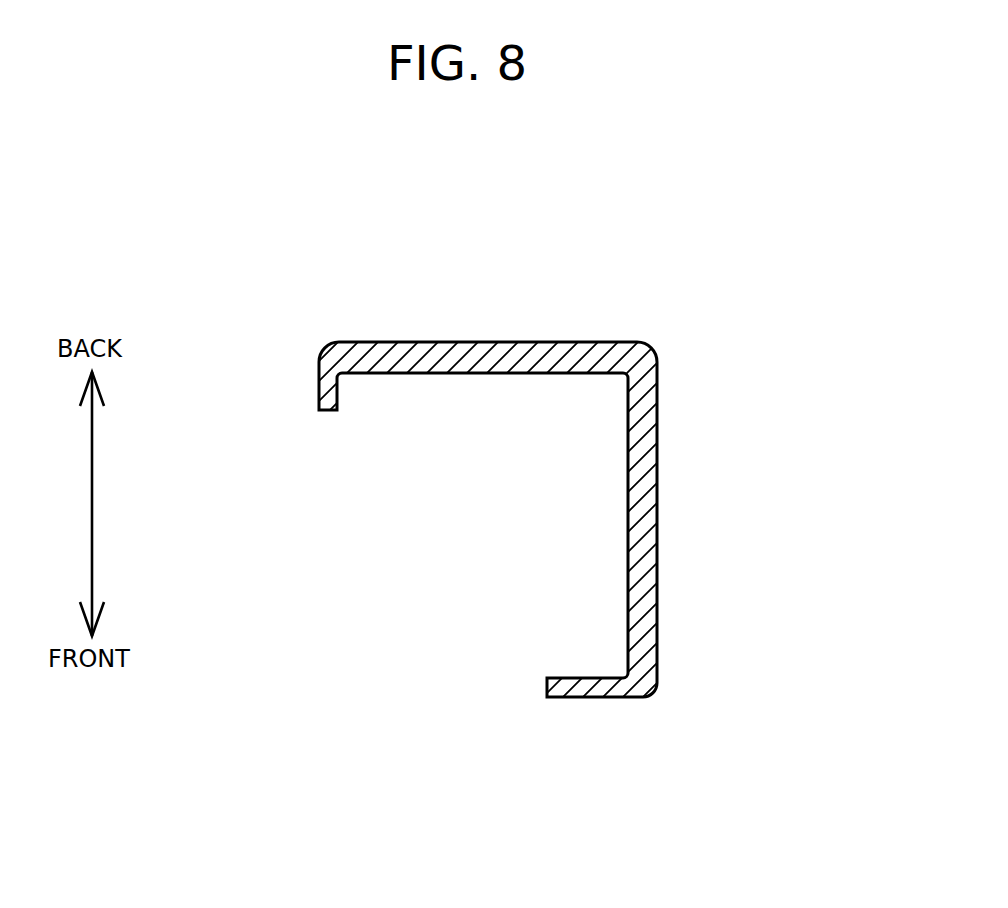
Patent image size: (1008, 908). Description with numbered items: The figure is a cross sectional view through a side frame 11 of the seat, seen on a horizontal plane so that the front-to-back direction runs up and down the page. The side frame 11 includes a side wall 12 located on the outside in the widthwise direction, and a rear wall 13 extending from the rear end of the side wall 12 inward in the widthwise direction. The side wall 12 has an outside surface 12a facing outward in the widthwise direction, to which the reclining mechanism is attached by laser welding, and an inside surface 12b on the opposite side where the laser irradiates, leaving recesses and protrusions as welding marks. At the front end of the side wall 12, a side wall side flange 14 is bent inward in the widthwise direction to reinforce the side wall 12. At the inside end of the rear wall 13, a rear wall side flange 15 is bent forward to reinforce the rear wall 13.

The side frame 11 is at (683, 317).
The side wall 12 is at (648, 482).
The outside surface 12a is at (655, 597).
The inside surface 12b is at (628, 552).
The rear wall 13 is at (473, 357).
The side wall side flange 14 is at (580, 686).
The rear wall side flange 15 is at (328, 392).